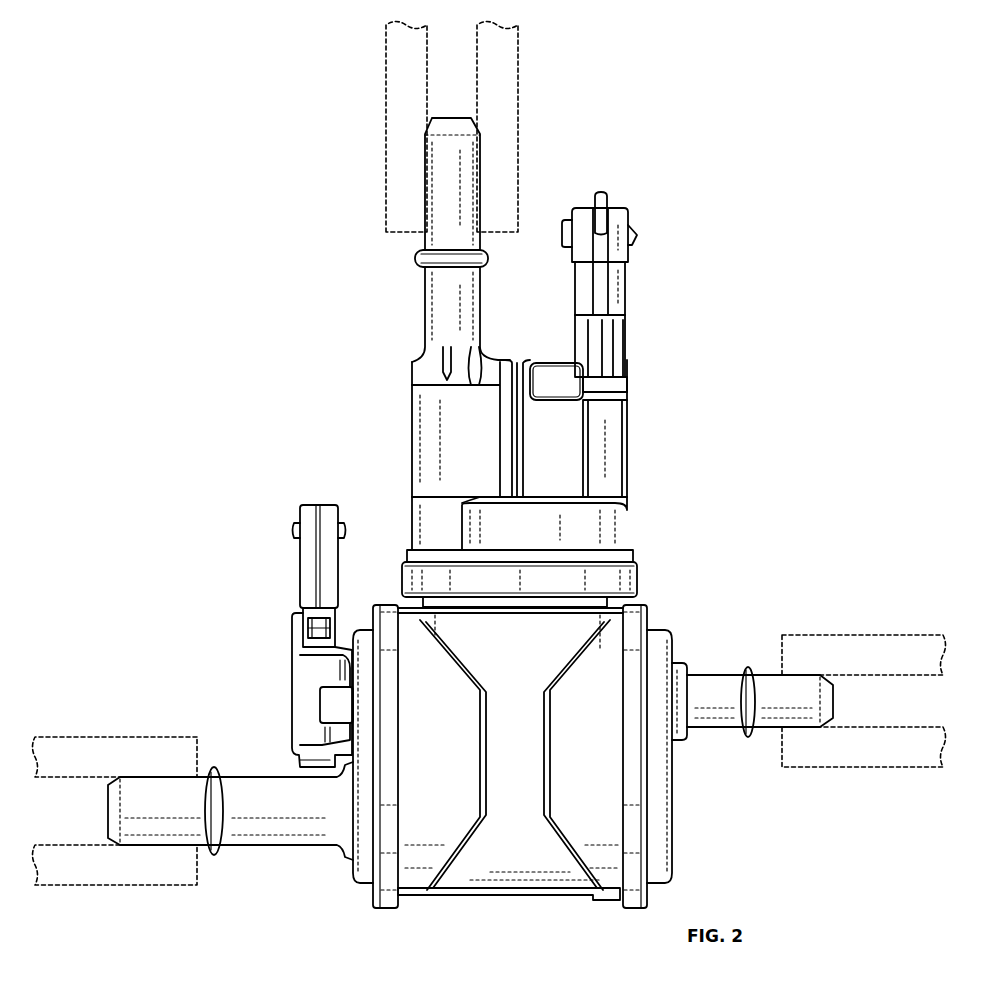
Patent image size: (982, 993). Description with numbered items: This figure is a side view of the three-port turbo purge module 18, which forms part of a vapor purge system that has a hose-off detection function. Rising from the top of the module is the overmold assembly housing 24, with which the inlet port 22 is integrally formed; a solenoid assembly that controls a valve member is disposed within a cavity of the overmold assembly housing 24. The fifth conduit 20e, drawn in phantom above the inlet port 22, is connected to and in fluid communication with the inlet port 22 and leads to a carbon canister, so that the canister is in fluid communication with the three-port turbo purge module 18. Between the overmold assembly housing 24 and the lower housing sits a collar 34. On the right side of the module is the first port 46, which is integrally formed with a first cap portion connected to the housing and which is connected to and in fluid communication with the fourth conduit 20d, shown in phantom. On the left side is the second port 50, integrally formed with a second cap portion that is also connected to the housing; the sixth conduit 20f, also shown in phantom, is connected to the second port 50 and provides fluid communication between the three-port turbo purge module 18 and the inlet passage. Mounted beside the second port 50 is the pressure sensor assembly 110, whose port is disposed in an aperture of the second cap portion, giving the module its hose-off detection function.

The three-port turbo purge module 18 is at (800, 543).
The fourth conduit 20d is at (880, 640).
The fifth conduit 20e is at (500, 98).
The sixth conduit 20f is at (100, 745).
The inlet port 22 is at (425, 295).
The overmold assembly housing 24 is at (638, 467).
The retaining collar 34 is at (625, 578).
The first port 46 is at (710, 688).
The second port 50 is at (257, 785).
The pressure sensor assembly 110 is at (278, 588).